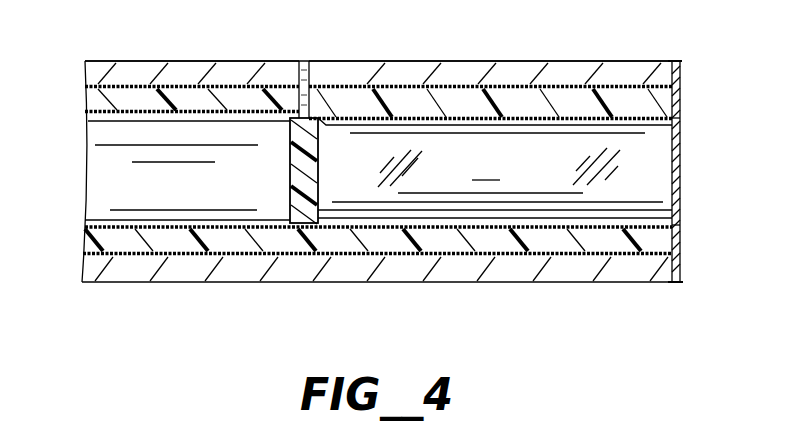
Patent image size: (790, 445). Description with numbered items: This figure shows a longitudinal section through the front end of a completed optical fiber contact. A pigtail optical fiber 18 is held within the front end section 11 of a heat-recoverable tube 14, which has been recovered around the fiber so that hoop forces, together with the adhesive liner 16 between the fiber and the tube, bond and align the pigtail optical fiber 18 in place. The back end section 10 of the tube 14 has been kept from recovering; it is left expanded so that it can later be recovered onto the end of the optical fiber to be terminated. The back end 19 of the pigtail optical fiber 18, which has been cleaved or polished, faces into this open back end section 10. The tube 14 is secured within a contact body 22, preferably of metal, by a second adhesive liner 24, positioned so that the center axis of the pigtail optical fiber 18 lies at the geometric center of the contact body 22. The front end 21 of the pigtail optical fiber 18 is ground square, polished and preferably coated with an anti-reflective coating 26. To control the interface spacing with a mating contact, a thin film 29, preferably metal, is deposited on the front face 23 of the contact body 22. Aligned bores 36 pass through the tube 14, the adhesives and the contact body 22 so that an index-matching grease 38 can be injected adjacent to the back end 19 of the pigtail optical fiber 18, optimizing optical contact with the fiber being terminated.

The back end section 10 is at (163, 79).
The front end section 11 is at (563, 100).
The heat-recoverable tube 14 is at (90, 97).
The adhesive liner 16 is at (88, 230).
The pigtail optical fiber 18 is at (453, 178).
The back end 19 is at (316, 180).
The front end 21 is at (680, 145).
The contact body 22 is at (127, 70).
The front face 23 is at (683, 279).
The second adhesive liner 24 is at (123, 257).
The anti-reflective coating 26 is at (680, 192).
The thin film 29 is at (685, 62).
The aligned bores 36 is at (303, 66).
The index-matching grease 38 is at (290, 188).